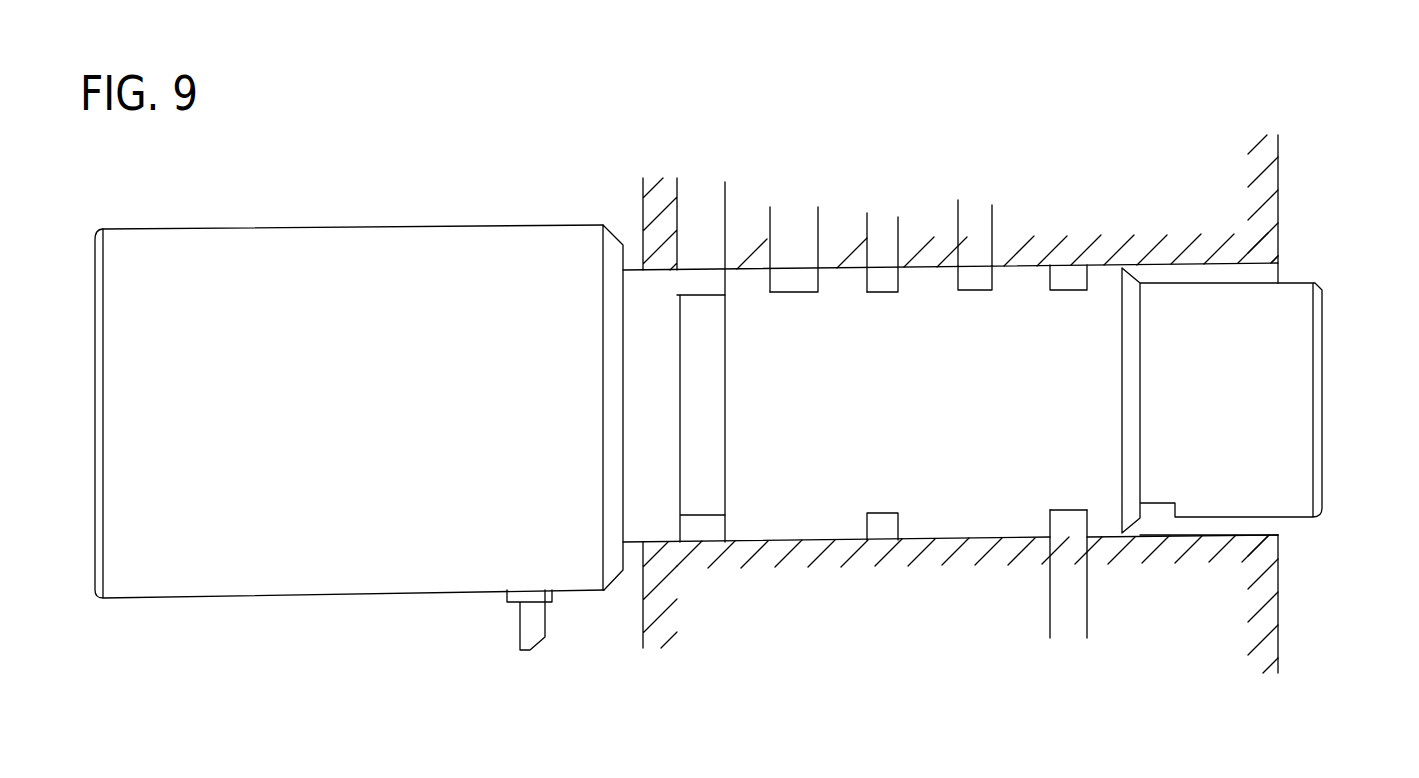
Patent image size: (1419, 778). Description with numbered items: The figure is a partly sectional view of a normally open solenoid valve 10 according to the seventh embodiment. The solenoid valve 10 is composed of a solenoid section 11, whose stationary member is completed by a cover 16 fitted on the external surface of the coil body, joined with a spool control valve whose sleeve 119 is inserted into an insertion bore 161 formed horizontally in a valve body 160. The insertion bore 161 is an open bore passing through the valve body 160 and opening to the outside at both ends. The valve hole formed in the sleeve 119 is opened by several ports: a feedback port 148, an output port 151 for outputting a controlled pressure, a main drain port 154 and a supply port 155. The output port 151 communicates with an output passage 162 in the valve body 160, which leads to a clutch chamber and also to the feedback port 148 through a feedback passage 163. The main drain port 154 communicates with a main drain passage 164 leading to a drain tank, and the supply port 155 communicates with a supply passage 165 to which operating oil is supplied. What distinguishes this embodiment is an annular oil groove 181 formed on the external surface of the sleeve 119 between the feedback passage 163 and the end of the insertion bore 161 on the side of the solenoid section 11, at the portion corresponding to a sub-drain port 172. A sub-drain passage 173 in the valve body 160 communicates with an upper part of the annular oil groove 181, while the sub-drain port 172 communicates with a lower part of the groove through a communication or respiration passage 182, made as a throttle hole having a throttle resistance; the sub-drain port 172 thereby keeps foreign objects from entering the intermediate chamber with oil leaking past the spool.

The solenoid valve 10 is at (552, 208).
The solenoid section 11 is at (448, 213).
The cover 16 is at (333, 246).
The sleeve 119 is at (1297, 337).
The feedback port 148 is at (812, 283).
The output port 151 is at (997, 253).
The main drain port 154 is at (1063, 528).
The supply port 155 is at (905, 252).
The valve body 160 is at (1278, 178).
The insertion bore 161 is at (1257, 532).
The output passage 162 is at (982, 215).
The feedback passage 163 is at (786, 258).
The main drain passage 164 is at (1072, 615).
The supply passage 165 is at (892, 242).
The sub-drain port 172 is at (718, 528).
The sub-drain passage 173 is at (708, 197).
The annular oil groove 181 is at (718, 443).
The communication or respiration passage 182 is at (695, 528).